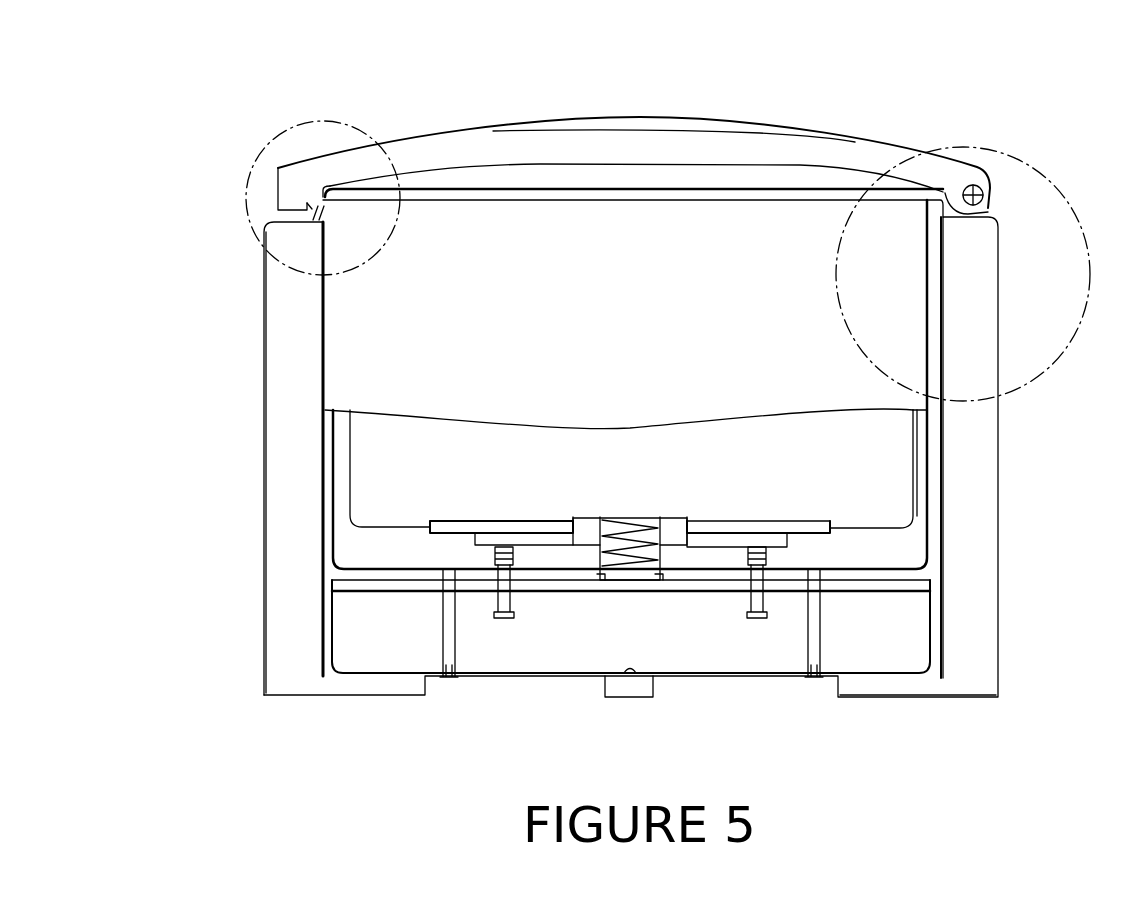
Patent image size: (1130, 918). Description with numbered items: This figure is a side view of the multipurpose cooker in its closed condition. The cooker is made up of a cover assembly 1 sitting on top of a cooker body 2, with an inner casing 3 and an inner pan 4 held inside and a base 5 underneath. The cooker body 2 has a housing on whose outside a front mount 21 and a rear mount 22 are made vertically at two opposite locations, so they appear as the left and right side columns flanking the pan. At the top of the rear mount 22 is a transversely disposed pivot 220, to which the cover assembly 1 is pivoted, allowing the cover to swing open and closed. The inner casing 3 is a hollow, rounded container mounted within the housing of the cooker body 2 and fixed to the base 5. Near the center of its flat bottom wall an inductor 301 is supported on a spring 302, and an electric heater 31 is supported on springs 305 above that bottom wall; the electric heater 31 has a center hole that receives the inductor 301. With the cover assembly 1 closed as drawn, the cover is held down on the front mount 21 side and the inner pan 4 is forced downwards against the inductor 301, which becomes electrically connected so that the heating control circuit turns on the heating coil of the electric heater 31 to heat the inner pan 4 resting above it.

The cover assembly 1 is at (663, 147).
The cooker body 2 is at (251, 376).
The front mount 21 is at (258, 482).
The rear mount 22 is at (988, 670).
The pivot 220 is at (988, 187).
The inner casing 3 is at (930, 462).
The electric heater 31 is at (820, 535).
The inductor 301 is at (660, 543).
The spring 302 is at (640, 570).
The springs 305 is at (343, 558).
The inner pan 4 is at (900, 480).
The base 5 is at (907, 637).